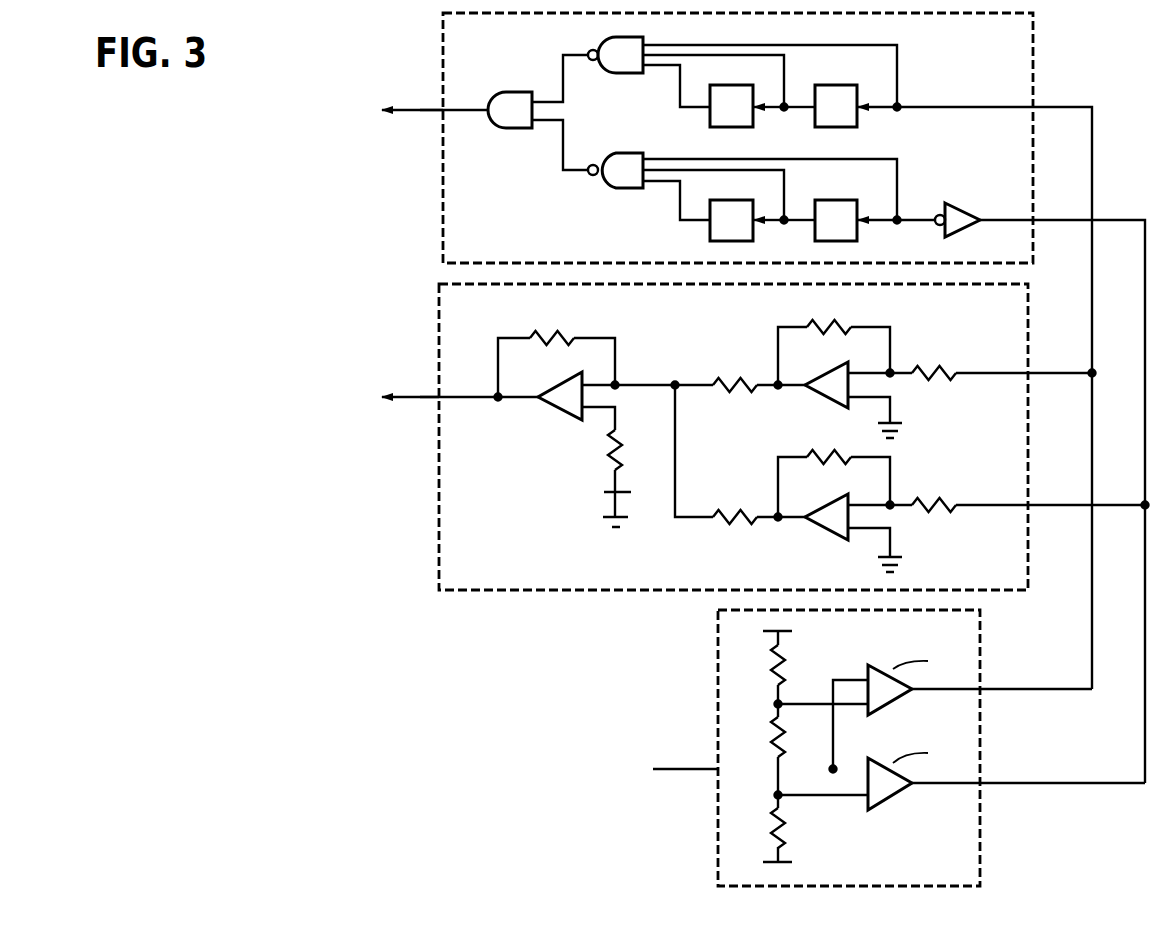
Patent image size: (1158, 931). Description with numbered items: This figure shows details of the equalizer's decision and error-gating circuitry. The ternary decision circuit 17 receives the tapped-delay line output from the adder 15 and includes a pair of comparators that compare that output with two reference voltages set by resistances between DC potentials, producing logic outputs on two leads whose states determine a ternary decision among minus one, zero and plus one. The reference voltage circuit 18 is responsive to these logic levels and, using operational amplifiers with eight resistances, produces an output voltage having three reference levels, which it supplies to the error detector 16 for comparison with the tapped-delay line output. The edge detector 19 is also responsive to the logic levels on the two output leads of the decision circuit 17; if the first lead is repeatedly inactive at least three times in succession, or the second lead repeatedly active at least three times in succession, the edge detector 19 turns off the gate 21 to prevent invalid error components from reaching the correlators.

The edge detector 19 is at (1033, 80).
The reference voltage circuit 18 is at (1028, 338).
The ternary decision circuit 17 is at (980, 665).
The gate 21 is at (367, 104).
The error detector 16 is at (347, 396).
The adder 15 is at (614, 769).